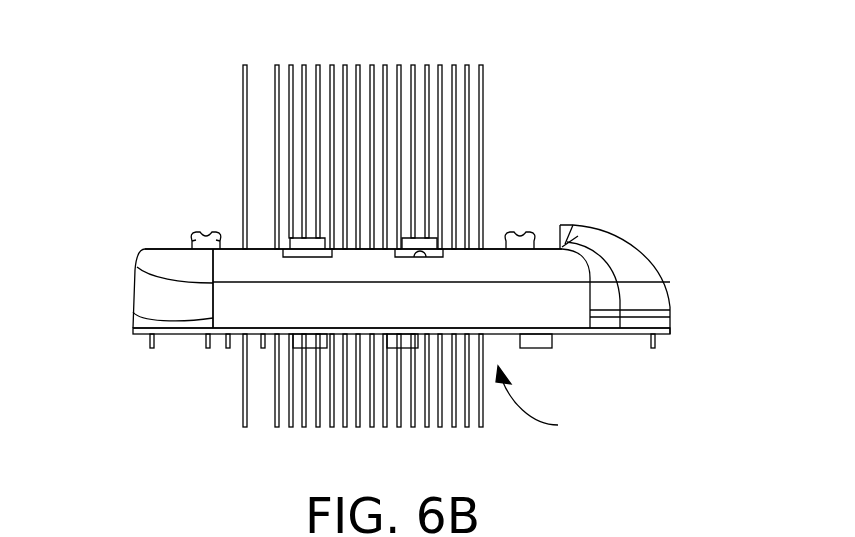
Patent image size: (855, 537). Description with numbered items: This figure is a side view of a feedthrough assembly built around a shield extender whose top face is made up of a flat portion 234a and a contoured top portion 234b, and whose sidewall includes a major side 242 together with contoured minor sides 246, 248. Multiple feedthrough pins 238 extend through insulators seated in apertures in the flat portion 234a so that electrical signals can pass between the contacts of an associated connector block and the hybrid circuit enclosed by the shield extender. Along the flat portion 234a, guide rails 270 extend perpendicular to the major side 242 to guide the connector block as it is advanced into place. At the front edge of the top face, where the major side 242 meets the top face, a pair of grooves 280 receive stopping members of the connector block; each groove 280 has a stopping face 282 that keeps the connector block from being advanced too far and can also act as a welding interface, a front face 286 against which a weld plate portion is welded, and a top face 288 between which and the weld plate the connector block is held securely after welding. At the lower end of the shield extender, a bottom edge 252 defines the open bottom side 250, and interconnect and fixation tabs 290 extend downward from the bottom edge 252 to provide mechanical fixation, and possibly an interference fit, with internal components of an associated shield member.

The feedthrough pin 238 is at (485, 92).
The flat portion of top face 234a is at (182, 248).
The contoured top portion 234b is at (586, 230).
The stopping face 282 is at (282, 248).
The contoured minor side 248 is at (135, 297).
The major side 242 is at (225, 300).
The front face 286 is at (298, 258).
The top face of groove 288 is at (418, 256).
The groove 280 is at (443, 255).
The guide rail 270 is at (520, 233).
The contoured minor side 246 is at (670, 300).
The bottom edge 252 is at (636, 334).
The interconnect and fixation tab 290 is at (543, 350).
The open bottom side 250 is at (546, 403).